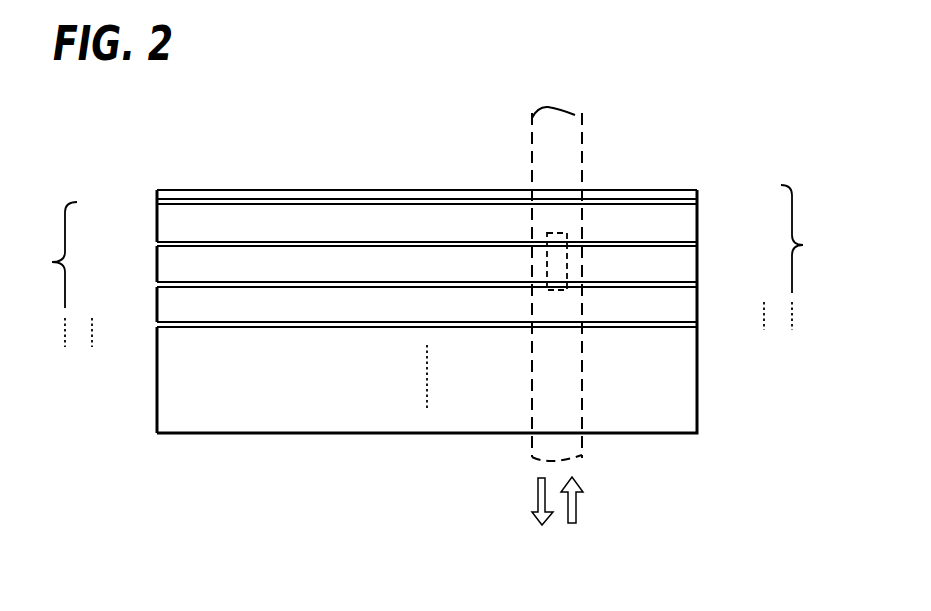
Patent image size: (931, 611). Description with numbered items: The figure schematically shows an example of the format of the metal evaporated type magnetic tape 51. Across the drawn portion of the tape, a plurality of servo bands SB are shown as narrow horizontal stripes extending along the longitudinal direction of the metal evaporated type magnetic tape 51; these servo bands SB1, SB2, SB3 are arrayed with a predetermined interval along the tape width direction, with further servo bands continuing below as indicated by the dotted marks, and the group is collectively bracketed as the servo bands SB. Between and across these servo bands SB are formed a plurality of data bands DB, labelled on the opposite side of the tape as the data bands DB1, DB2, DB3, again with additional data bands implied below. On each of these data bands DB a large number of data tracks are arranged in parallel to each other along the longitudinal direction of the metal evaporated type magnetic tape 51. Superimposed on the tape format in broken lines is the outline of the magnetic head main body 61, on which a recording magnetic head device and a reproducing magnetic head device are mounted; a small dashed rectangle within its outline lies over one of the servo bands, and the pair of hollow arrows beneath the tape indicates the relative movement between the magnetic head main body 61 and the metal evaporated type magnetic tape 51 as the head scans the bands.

The metal evaporated type magnetic tape 51 is at (238, 189).
The servo band SB1 is at (697, 200).
The servo band SB2 is at (697, 242).
The servo band SB3 is at (697, 282).
The servo bands SB is at (801, 257).
The data band DB1 is at (178, 225).
The data band DB2 is at (178, 266).
The data band DB3 is at (178, 307).
The data bands DB is at (52, 274).
The magnetic head main body 61 is at (583, 449).